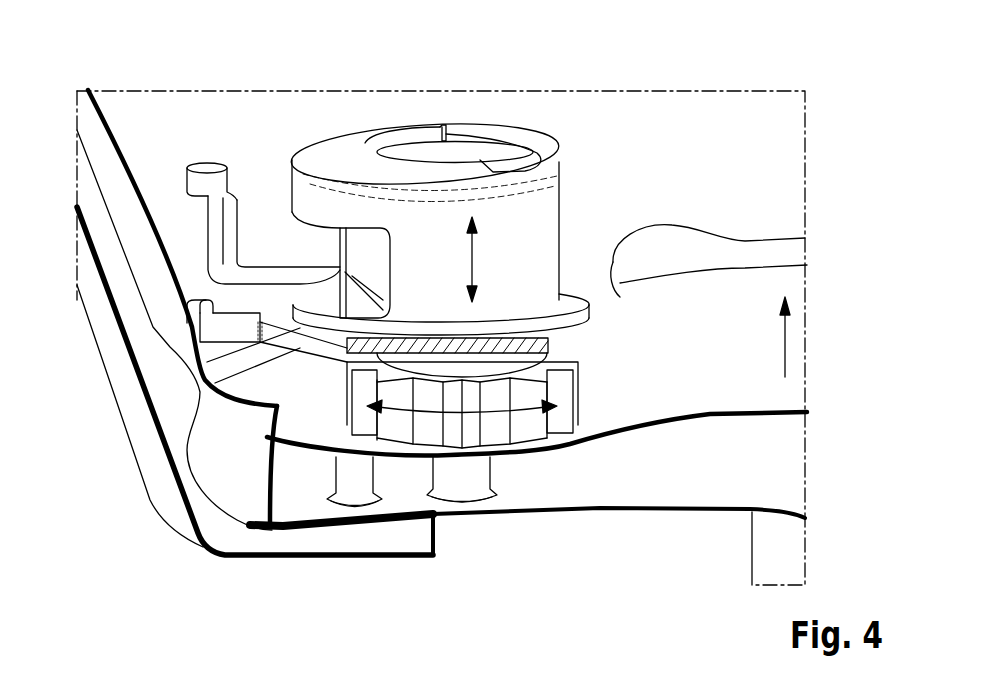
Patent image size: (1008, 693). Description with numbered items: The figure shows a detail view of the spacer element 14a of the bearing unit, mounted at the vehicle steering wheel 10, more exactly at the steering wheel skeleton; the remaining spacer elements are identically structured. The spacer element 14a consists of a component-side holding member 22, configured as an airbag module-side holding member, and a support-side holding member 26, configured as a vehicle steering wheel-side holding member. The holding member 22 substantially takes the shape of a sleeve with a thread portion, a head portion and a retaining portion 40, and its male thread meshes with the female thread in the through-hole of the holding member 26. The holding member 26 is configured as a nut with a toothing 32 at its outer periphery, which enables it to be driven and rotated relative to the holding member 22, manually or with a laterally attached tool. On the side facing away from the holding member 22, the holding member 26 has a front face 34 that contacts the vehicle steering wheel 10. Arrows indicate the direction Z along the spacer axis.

The vehicle steering wheel 10 is at (662, 490).
The spacer element 14a is at (462, 133).
The component-side holding member 22 is at (385, 173).
The support-side holding member 26 is at (455, 437).
The toothing 32 is at (530, 433).
The front face 34 is at (557, 445).
The retaining portion 40 is at (297, 252).
The axial direction Z is at (790, 345).